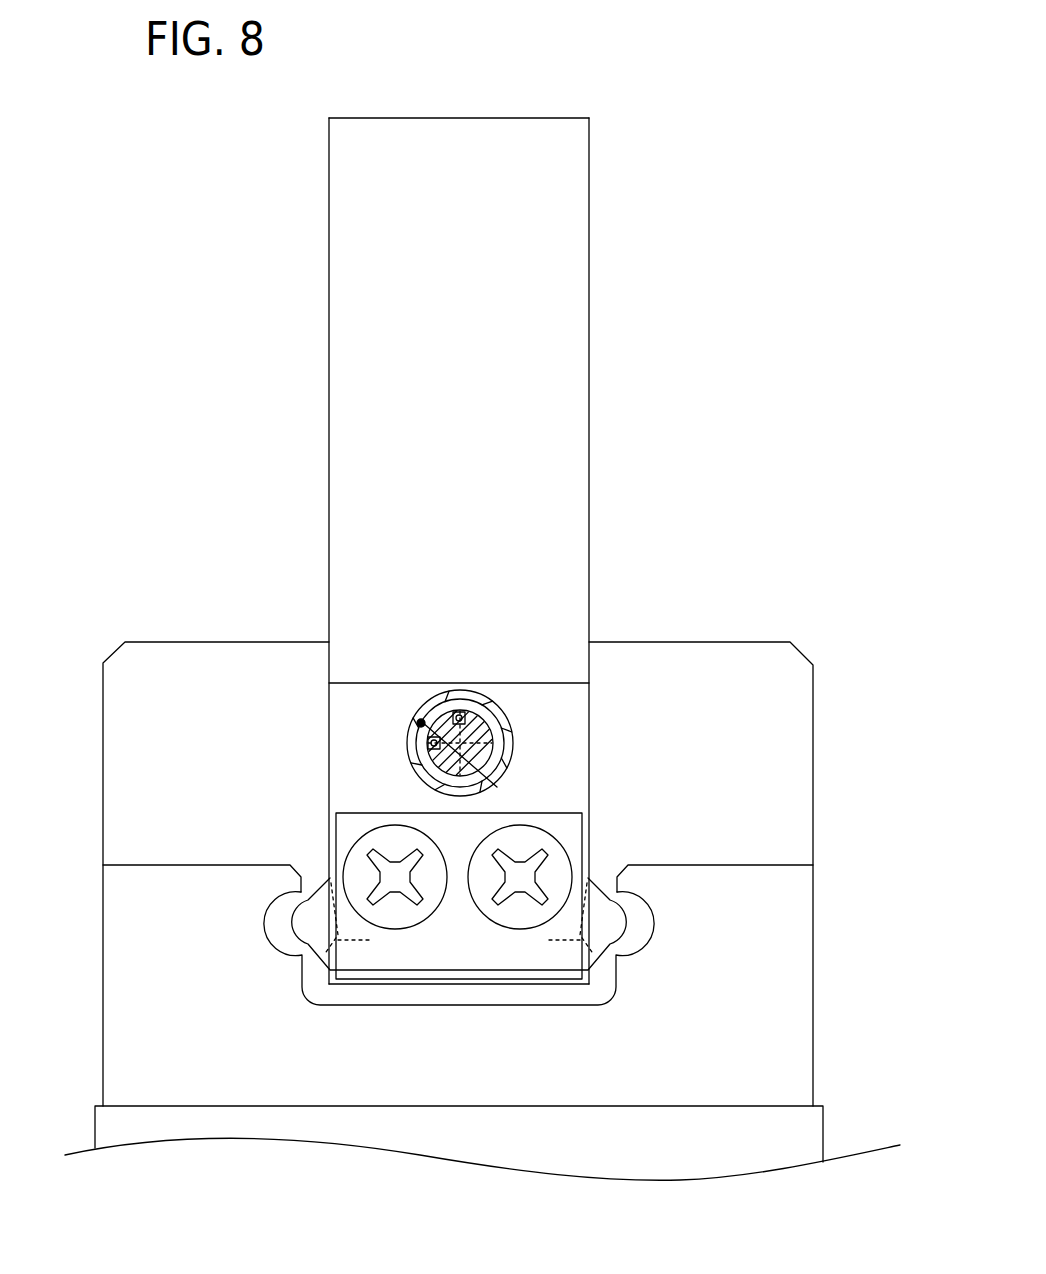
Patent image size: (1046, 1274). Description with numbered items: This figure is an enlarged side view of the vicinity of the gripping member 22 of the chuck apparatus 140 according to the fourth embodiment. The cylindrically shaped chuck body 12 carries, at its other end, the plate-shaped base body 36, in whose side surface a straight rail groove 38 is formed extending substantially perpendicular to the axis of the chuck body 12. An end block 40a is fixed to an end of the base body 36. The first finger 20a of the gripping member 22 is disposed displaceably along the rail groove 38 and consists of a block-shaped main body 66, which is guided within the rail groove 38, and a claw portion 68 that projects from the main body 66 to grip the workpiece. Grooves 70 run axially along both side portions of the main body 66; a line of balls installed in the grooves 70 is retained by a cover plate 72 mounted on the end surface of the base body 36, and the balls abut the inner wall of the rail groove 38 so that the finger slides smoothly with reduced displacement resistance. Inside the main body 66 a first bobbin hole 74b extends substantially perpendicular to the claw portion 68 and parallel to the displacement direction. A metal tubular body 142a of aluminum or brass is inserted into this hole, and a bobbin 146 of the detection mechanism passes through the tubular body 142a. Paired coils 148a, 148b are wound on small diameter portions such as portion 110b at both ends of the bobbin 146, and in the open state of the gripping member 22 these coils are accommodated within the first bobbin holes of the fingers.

The chuck apparatus 140 is at (745, 99).
The chuck body 12 is at (828, 1109).
The base body 36 is at (420, 851).
The end block 40a is at (676, 662).
The gripping member 22 is at (454, 518).
The first finger 20a is at (325, 207).
The claw portion 68 is at (578, 320).
The main body 66 is at (568, 747).
The small diameter portion 110b is at (480, 777).
The tubular body 142a is at (422, 777).
The bobbin 146 is at (488, 716).
The first bobbin hole 74b is at (418, 722).
The coil 148a is at (460, 713).
The coil 148b is at (430, 742).
The rail groove 38 is at (369, 993).
The cover plate 72 is at (450, 966).
The groove 70 is at (457, 895).